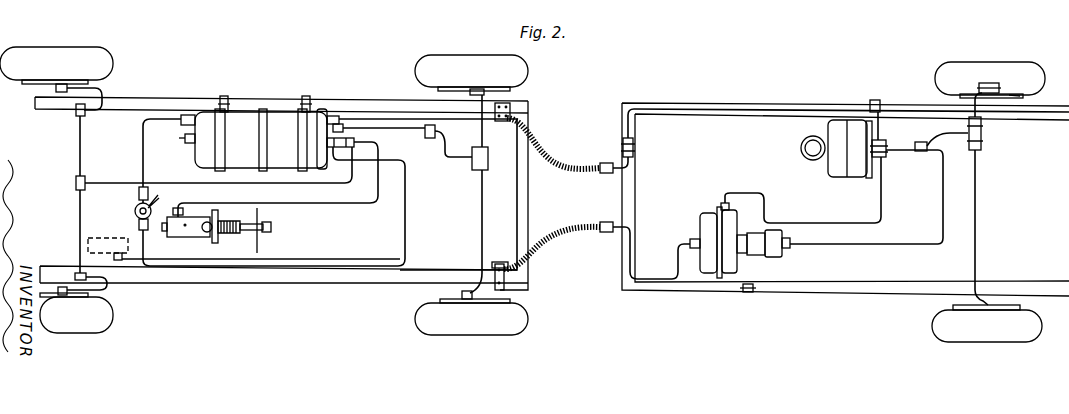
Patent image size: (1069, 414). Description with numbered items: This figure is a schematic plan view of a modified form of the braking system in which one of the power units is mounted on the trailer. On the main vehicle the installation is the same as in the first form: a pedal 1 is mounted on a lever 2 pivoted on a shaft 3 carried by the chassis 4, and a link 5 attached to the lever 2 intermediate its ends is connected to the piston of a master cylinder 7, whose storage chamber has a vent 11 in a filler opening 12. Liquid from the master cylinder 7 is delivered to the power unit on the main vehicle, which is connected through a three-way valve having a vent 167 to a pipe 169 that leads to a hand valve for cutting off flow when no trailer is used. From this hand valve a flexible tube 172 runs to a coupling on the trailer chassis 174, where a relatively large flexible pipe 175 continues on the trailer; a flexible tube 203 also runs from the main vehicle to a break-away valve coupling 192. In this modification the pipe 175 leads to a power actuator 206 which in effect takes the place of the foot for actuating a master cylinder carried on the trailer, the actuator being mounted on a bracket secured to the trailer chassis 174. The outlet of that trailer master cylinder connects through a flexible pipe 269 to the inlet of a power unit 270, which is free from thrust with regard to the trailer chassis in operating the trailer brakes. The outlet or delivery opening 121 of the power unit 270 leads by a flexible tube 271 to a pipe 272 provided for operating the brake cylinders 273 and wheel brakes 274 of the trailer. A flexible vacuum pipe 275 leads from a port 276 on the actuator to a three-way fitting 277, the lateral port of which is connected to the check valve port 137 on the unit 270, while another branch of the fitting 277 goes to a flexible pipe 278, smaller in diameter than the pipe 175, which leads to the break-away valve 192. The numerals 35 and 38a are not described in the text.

The pedal 1 is at (272, 229).
The lever 2 is at (233, 218).
The shaft 3 is at (262, 250).
The chassis 4 is at (214, 274).
The link 5 is at (242, 232).
The master cylinder 7 is at (198, 235).
The vent 11 is at (237, 303).
The filler opening 12 is at (236, 291).
The reservoir outlet fitting 35 is at (333, 162).
The air reservoir and supply pipe 38a is at (407, 227).
The outlet or delivery opening 121 is at (913, 141).
The check valve port 137 is at (872, 147).
The vent 167 is at (132, 213).
The pipe 169 is at (292, 284).
The flexible tube 172 is at (553, 243).
The trailer chassis 174 is at (692, 292).
The flexible pipe 175 is at (633, 288).
The valve coupling 192 is at (636, 149).
The flexible tube 203 is at (565, 160).
The power actuator 206 is at (705, 235).
The flexible pipe 269 is at (822, 247).
The power unit 270 is at (840, 152).
The flexible tube 271 is at (950, 140).
The pipe 272 is at (981, 208).
The brake cylinders 273 is at (988, 84).
The wheel brakes 274 is at (1022, 96).
The flexible vacuum pipe 275 is at (884, 220).
The port 276 is at (722, 211).
The three-way fitting 277 is at (887, 143).
The flexible pipe 278 is at (707, 108).